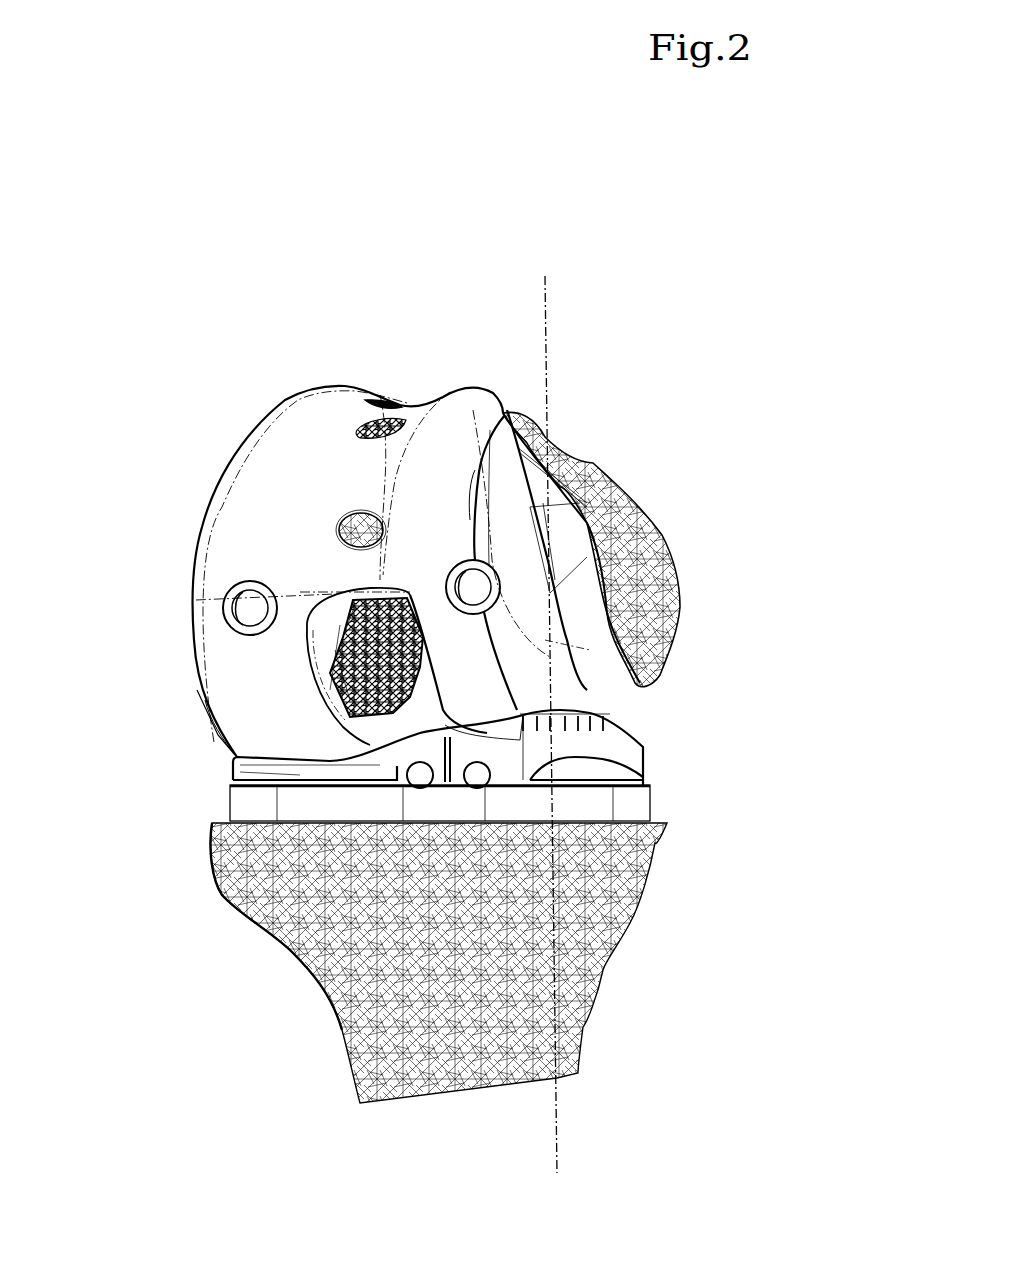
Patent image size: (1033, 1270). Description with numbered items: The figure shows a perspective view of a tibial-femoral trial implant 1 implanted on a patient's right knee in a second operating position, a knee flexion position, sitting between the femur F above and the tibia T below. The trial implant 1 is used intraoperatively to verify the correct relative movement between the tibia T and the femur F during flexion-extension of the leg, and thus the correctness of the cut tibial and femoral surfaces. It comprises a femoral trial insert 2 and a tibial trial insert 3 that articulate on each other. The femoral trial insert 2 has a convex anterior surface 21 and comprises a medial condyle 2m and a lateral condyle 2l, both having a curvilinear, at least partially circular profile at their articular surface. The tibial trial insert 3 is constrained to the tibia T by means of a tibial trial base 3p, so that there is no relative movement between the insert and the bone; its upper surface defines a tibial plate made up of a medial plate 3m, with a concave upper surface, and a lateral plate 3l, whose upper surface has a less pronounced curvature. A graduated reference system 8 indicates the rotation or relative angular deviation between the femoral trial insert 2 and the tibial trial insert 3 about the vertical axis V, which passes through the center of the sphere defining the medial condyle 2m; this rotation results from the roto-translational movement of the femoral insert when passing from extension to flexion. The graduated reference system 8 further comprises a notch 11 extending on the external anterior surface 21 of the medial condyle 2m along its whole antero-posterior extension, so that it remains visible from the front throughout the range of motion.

The tibial-femoral trial implant 1 is at (154, 513).
The femoral trial insert 2 is at (439, 513).
The convex anterior surface 21 is at (286, 480).
The lateral condyle 2l is at (235, 710).
The medial condyle 2m is at (543, 677).
The notch 11 is at (475, 470).
The tibial trial insert 3 is at (435, 791).
The lateral plate 3l is at (232, 758).
The medial plate 3m is at (633, 760).
The tibial trial base 3p is at (650, 805).
The graduated reference system 8 is at (634, 722).
The vertical axis V is at (545, 296).
The femur F is at (656, 534).
The tibia T is at (600, 968).